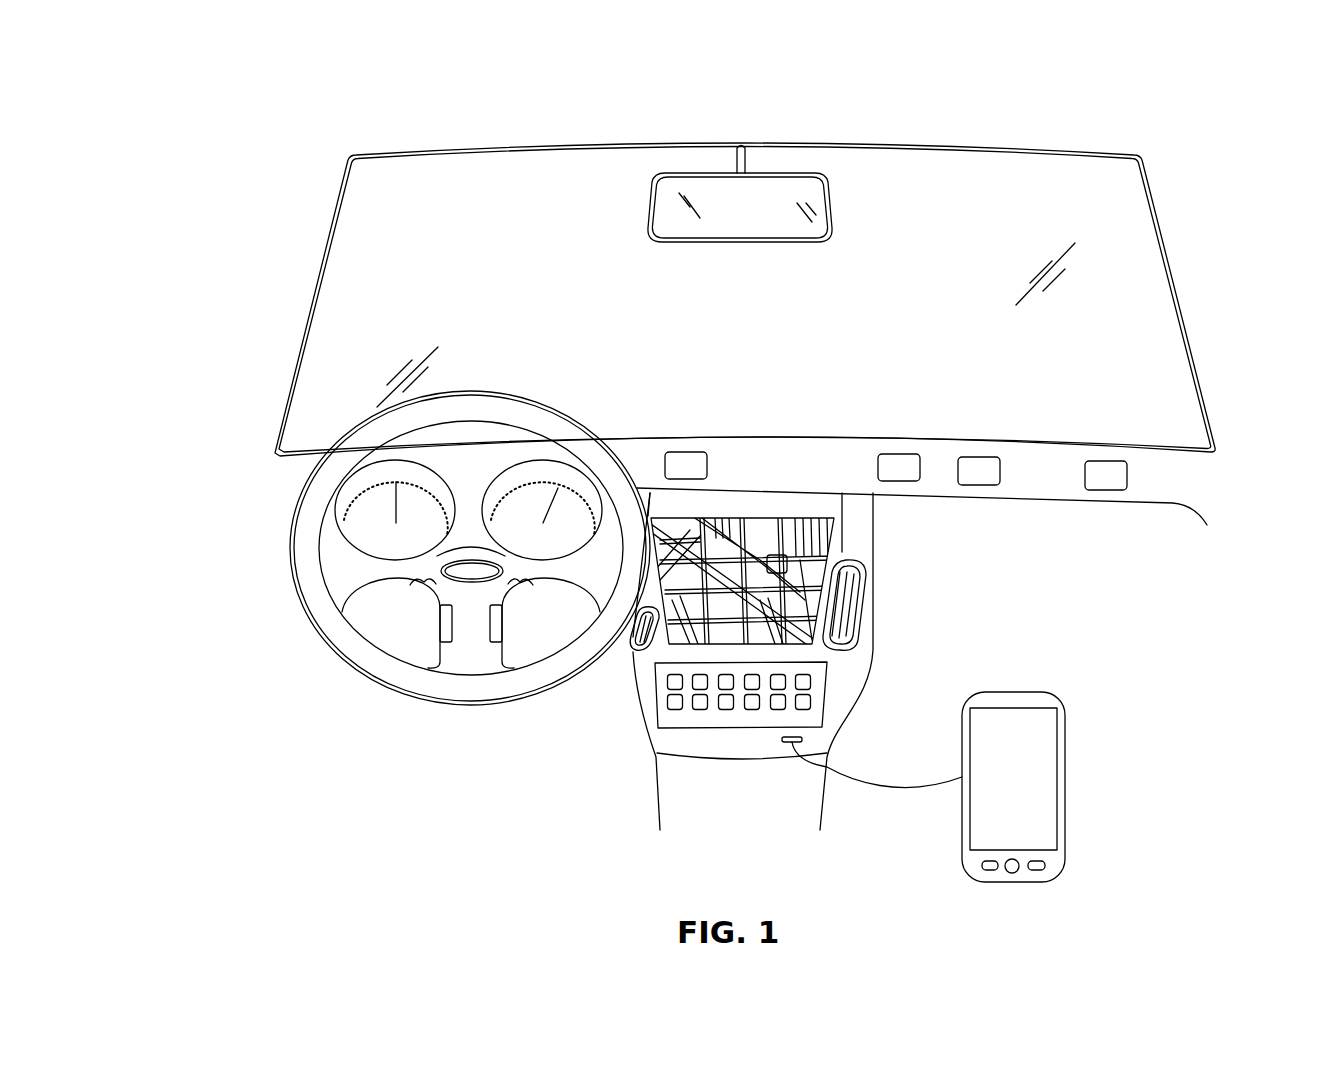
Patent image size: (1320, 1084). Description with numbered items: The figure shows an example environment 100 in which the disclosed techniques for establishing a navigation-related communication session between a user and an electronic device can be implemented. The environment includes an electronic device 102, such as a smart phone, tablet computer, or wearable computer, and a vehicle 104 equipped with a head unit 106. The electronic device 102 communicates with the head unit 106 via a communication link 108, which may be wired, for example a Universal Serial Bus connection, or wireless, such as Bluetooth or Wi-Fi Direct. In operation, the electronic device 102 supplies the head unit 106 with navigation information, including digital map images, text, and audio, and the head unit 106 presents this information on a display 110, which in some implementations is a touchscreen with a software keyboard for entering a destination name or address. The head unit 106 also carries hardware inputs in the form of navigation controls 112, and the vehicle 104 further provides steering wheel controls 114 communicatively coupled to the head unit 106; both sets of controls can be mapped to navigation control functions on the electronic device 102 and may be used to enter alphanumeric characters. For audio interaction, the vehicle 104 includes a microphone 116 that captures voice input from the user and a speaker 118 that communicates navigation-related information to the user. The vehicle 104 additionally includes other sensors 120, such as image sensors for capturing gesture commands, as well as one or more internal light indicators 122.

The environment 100 is at (478, 100).
The electronic device 102 is at (1020, 690).
The vehicle 104 is at (268, 417).
The head unit 106 is at (787, 484).
The communication link 108 is at (884, 775).
The display 110 is at (846, 537).
The navigation controls 112 is at (661, 693).
The steering wheel controls 114 is at (385, 682).
The microphone 116 is at (633, 633).
The speaker 118 is at (851, 612).
The sensors 120 is at (898, 450).
The internal light indicators 122 is at (686, 450).